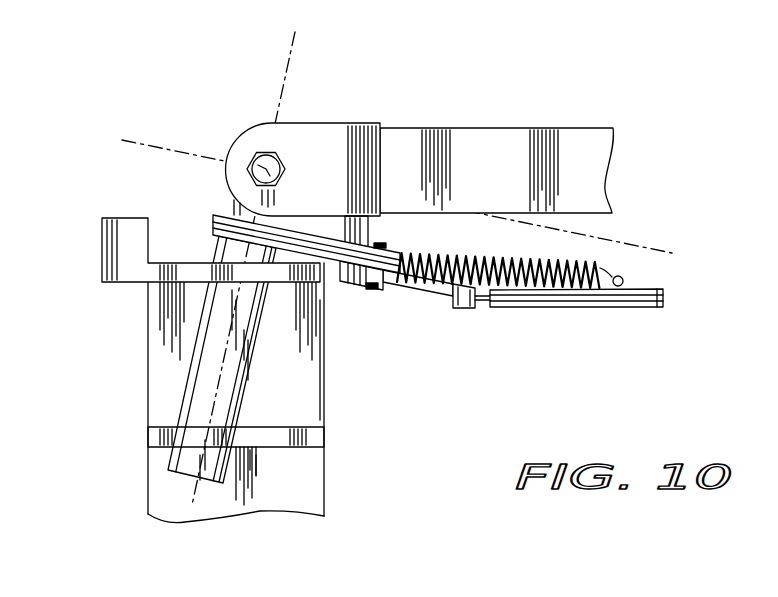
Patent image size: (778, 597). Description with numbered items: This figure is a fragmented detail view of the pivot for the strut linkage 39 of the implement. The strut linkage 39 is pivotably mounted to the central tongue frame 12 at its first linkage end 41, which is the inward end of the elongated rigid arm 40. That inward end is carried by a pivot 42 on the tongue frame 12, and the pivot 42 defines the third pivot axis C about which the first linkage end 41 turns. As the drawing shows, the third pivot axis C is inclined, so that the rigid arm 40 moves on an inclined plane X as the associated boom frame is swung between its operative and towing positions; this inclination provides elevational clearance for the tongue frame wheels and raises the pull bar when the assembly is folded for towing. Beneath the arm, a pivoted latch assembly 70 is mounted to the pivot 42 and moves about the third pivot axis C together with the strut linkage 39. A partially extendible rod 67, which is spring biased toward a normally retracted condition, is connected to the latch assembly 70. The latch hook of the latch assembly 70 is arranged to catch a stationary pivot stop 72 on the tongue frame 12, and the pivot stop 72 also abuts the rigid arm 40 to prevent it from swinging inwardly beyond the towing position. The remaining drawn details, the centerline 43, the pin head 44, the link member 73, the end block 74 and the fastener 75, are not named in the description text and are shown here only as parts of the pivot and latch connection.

The tongue frame 12 is at (340, 477).
The strut linkage 39 is at (441, 146).
The rigid arm 40 is at (598, 161).
The first linkage end 41 is at (331, 127).
The pivot 42 is at (227, 392).
The pivot axis 43 is at (291, 68).
The pivot pin nut 44 is at (255, 152).
The partially extendible rod 67 is at (580, 309).
The latch assembly 70 is at (427, 297).
The pivot stop 72 is at (105, 260).
The link bar 73 is at (358, 234).
The end block 74 is at (333, 282).
The bolt 75 is at (371, 289).
The third pivot axis C is at (290, 53).
The inclined plane X is at (630, 242).